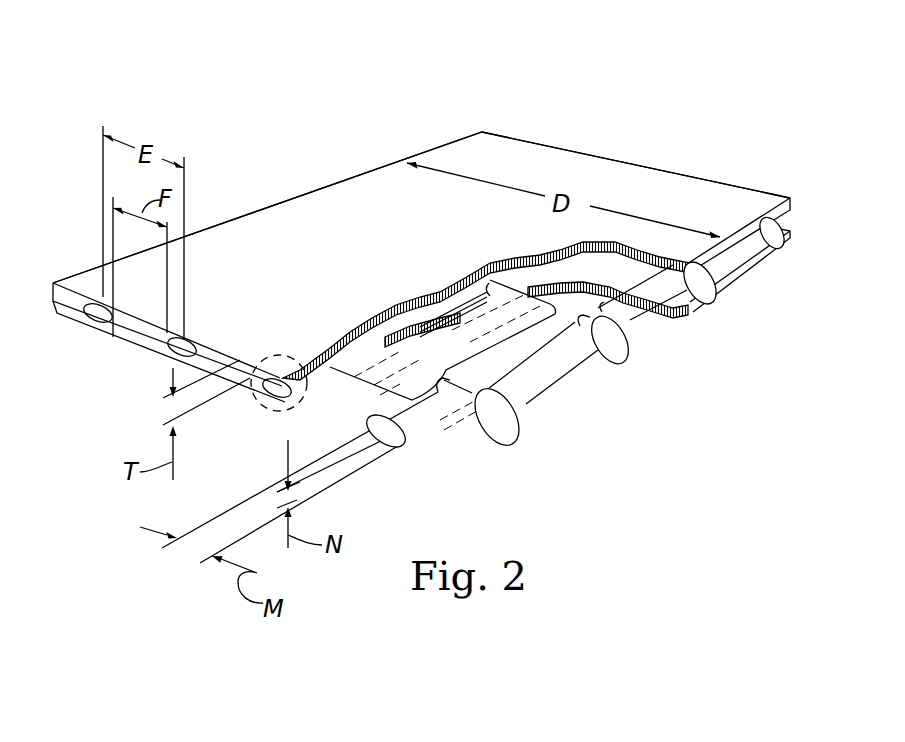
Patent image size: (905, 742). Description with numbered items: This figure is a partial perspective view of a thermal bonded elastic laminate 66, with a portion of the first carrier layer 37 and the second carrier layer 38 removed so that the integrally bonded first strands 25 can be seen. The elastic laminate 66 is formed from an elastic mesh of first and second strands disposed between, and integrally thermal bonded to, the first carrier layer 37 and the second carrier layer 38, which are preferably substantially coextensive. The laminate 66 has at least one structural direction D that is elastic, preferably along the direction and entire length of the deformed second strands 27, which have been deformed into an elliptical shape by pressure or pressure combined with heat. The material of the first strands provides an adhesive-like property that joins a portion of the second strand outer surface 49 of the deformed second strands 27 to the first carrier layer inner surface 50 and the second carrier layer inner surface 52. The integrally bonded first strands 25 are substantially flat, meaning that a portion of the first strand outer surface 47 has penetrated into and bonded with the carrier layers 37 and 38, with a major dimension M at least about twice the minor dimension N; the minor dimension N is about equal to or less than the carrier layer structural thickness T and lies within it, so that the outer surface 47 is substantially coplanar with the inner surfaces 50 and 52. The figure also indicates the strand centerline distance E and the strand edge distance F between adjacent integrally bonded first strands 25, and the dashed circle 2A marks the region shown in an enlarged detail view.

The elastic laminate 66 is at (550, 80).
The first carrier layer 37 is at (714, 185).
The second carrier layer 38 is at (778, 258).
The second carrier layer inner surface 52 is at (740, 260).
The first carrier layer inner surface 50 is at (723, 257).
The second strand outer surface 49 is at (413, 367).
The deformed second strands 27 is at (508, 408).
The first strand outer surface 47 is at (417, 405).
The integrally bonded first strands 25 is at (82, 323).
The detail region 2A is at (272, 355).